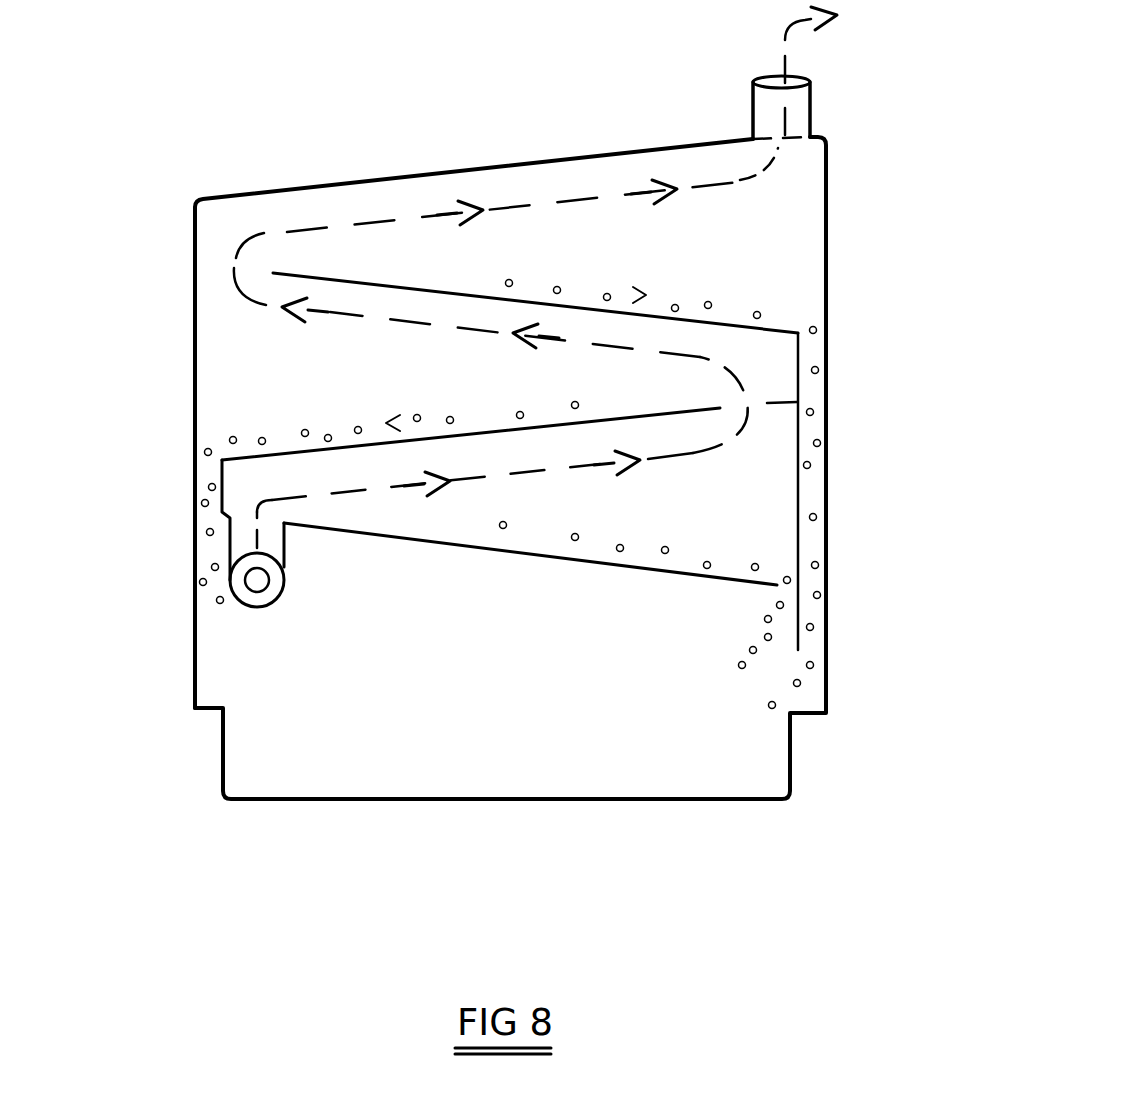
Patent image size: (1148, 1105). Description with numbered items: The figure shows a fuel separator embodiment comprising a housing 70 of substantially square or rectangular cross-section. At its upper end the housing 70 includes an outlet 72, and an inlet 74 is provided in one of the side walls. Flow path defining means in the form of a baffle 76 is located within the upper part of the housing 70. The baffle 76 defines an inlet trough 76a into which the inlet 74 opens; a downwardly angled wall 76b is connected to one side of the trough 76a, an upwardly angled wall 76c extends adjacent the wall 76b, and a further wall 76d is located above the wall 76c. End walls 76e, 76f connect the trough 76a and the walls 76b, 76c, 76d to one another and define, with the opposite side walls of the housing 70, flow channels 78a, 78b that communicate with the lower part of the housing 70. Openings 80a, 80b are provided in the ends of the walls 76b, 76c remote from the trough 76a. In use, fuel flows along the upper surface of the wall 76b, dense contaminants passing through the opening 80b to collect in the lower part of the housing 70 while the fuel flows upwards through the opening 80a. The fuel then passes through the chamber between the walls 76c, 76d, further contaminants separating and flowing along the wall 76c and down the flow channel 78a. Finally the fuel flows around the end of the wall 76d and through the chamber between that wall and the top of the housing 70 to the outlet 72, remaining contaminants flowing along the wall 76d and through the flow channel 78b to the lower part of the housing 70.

The housing 70 is at (827, 562).
The outlet 72 is at (813, 100).
The inlet 74 is at (233, 580).
The baffle 76 is at (284, 442).
The inlet trough 76a is at (287, 557).
The downwardly angled wall 76b is at (520, 552).
The upwardly angled wall 76c is at (637, 420).
The further wall 76d is at (687, 320).
The end wall 76e is at (220, 470).
The end wall 76f is at (802, 458).
The flow channel 78a is at (210, 545).
The flow channel 78b is at (820, 500).
The opening 80a is at (802, 353).
The opening 80b is at (785, 583).